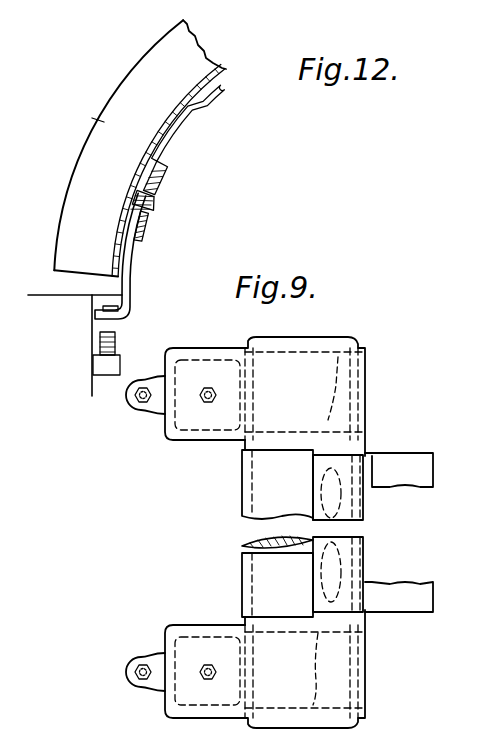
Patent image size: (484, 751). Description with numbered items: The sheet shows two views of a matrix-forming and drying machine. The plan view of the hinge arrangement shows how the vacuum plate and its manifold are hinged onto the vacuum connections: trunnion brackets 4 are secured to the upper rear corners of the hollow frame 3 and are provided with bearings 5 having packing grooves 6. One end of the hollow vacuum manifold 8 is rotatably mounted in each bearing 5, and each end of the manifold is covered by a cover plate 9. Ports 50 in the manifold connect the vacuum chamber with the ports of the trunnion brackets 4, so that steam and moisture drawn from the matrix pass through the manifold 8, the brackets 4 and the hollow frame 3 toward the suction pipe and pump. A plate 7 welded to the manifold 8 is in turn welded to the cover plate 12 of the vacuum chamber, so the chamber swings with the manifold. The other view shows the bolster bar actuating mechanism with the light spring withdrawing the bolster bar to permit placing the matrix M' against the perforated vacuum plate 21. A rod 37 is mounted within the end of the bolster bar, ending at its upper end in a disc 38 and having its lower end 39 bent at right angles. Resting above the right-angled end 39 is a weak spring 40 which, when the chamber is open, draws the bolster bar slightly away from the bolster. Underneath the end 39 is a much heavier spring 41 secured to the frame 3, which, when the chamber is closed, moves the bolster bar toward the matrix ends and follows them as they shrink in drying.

In FIG. 12, the perforated vacuum plate 21 is at (222, 68).
In FIG. 12, the brake lining block M' is at (172, 178).
In FIG. 12, the disc 38 is at (148, 223).
In FIG. 12, the rod 37 is at (131, 281).
In FIG. 12, the right-angled end 39 is at (132, 314).
In FIG. 12, the weak spring 40 is at (92, 312).
In FIG. 12, the hollow frame 3 is at (92, 334).
In FIG. 12, the heavier spring 41 is at (116, 348).
In FIG. 9, the cover plate 9 is at (343, 339).
In FIG. 9, the bearing 5 is at (246, 396).
In FIG. 9, the packing groove 6 is at (325, 531).
In FIG. 9, the plate 7 is at (313, 473).
In FIG. 9, the hollow vacuum manifold 8 is at (240, 512).
In FIG. 9, the port 50 is at (339, 532).
In FIG. 9, the cover plate of the vacuum chamber 12 is at (415, 466).
In FIG. 9, the trunnion bracket 4 is at (208, 712).